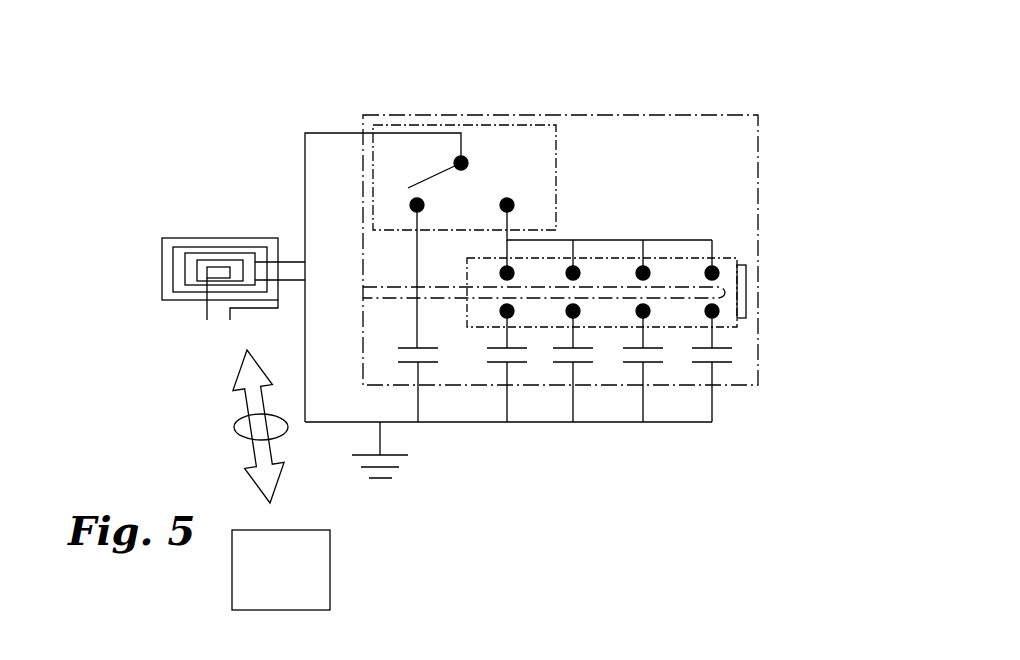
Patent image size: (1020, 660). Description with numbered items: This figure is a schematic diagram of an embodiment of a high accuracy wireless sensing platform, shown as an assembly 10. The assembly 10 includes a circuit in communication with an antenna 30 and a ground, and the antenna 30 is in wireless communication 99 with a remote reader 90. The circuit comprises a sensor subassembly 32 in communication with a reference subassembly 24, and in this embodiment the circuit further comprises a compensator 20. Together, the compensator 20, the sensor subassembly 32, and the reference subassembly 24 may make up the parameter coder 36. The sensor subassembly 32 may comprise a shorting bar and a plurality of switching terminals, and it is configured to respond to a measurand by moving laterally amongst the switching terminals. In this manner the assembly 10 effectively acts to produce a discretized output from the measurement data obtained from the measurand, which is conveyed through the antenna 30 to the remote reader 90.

The assembly 10 is at (300, 105).
The compensator 20 is at (503, 124).
The reference subassembly 24 is at (438, 367).
The antenna 30 is at (172, 222).
The sensor subassembly 32 is at (669, 252).
The parameter coder 36 is at (759, 231).
The remote reader 90 is at (330, 530).
The wireless communication 99 is at (235, 428).